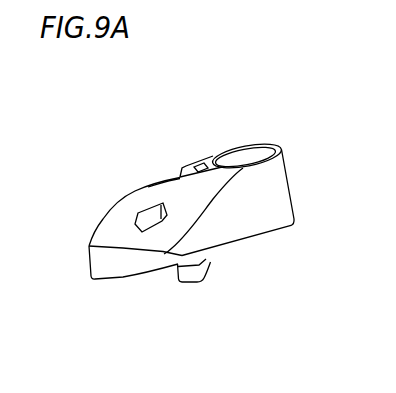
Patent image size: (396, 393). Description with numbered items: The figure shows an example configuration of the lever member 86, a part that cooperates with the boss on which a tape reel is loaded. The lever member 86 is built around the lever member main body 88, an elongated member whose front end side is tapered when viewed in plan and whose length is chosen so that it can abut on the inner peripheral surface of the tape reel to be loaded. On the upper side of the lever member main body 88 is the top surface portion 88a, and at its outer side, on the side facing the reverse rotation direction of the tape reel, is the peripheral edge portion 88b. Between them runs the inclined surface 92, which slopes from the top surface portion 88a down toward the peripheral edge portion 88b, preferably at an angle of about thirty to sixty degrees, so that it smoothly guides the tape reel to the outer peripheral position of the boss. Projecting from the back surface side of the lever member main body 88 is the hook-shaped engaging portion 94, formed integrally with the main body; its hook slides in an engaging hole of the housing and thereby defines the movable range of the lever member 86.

The lever member 86 is at (237, 114).
The lever member main body 88 is at (280, 190).
The top surface portion 88a is at (130, 192).
The peripheral edge portion 88b is at (162, 246).
The inclined surface 92 is at (123, 246).
The engaging portion 94 is at (209, 264).